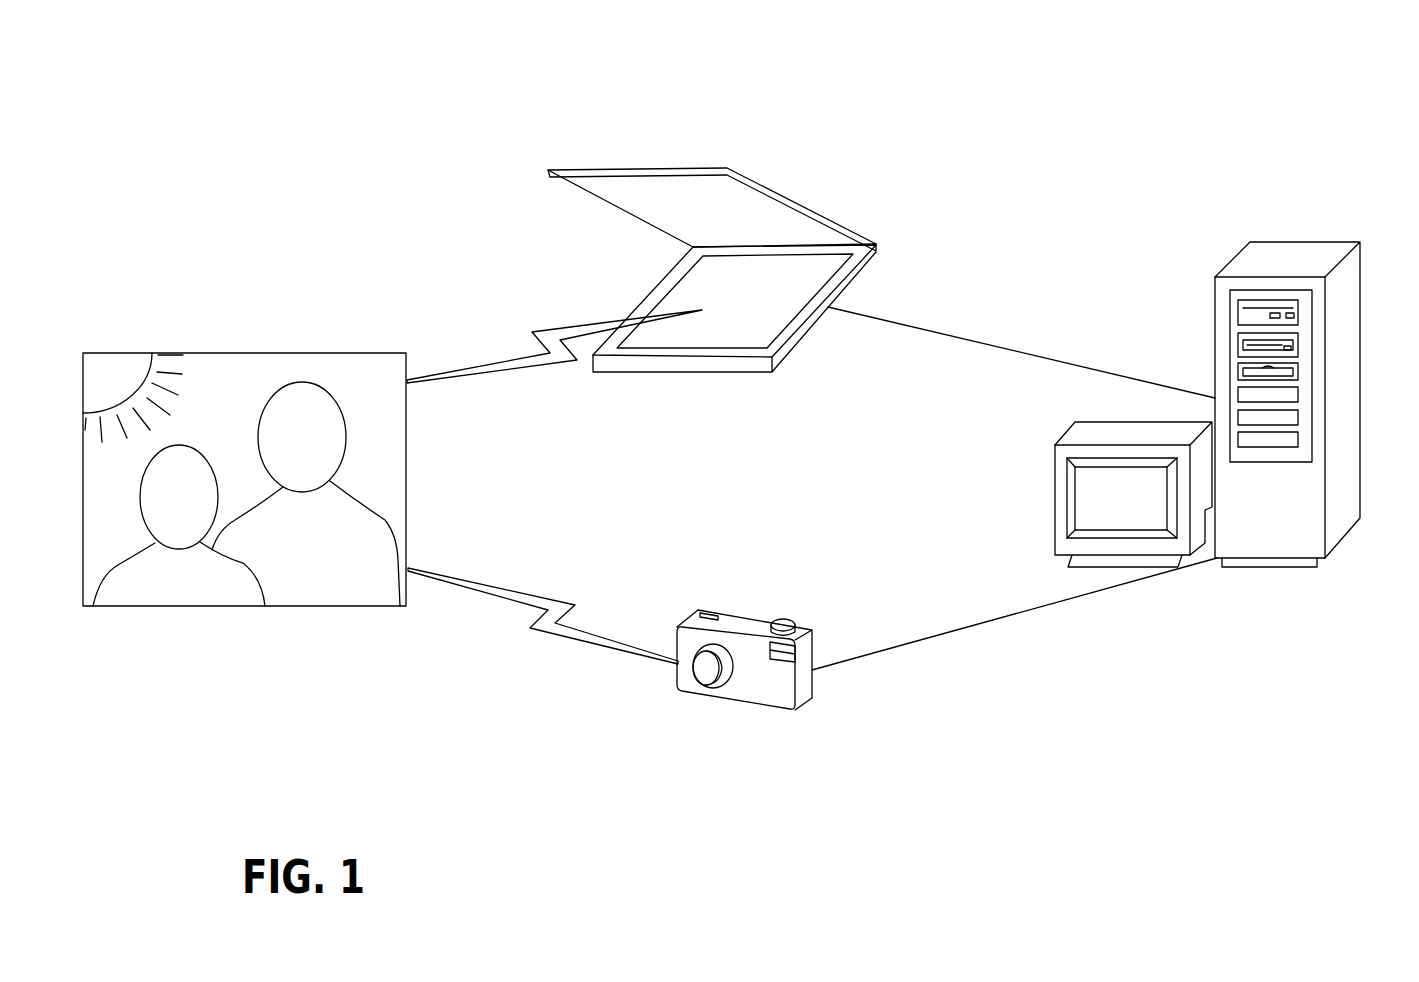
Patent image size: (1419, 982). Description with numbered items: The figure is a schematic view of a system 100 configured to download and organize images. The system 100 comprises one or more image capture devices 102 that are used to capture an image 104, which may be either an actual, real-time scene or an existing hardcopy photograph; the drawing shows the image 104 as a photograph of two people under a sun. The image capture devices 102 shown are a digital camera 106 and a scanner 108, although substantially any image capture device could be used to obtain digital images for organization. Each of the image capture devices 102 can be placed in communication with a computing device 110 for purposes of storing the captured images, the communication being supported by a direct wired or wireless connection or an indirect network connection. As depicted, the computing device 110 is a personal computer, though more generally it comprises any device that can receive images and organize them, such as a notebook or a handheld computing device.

The system 100 is at (1197, 116).
The image capture device 102 is at (878, 177).
The image 104 is at (188, 592).
The digital camera 106 is at (760, 697).
The scanner 108 is at (667, 363).
The computing device 110 is at (1343, 522).